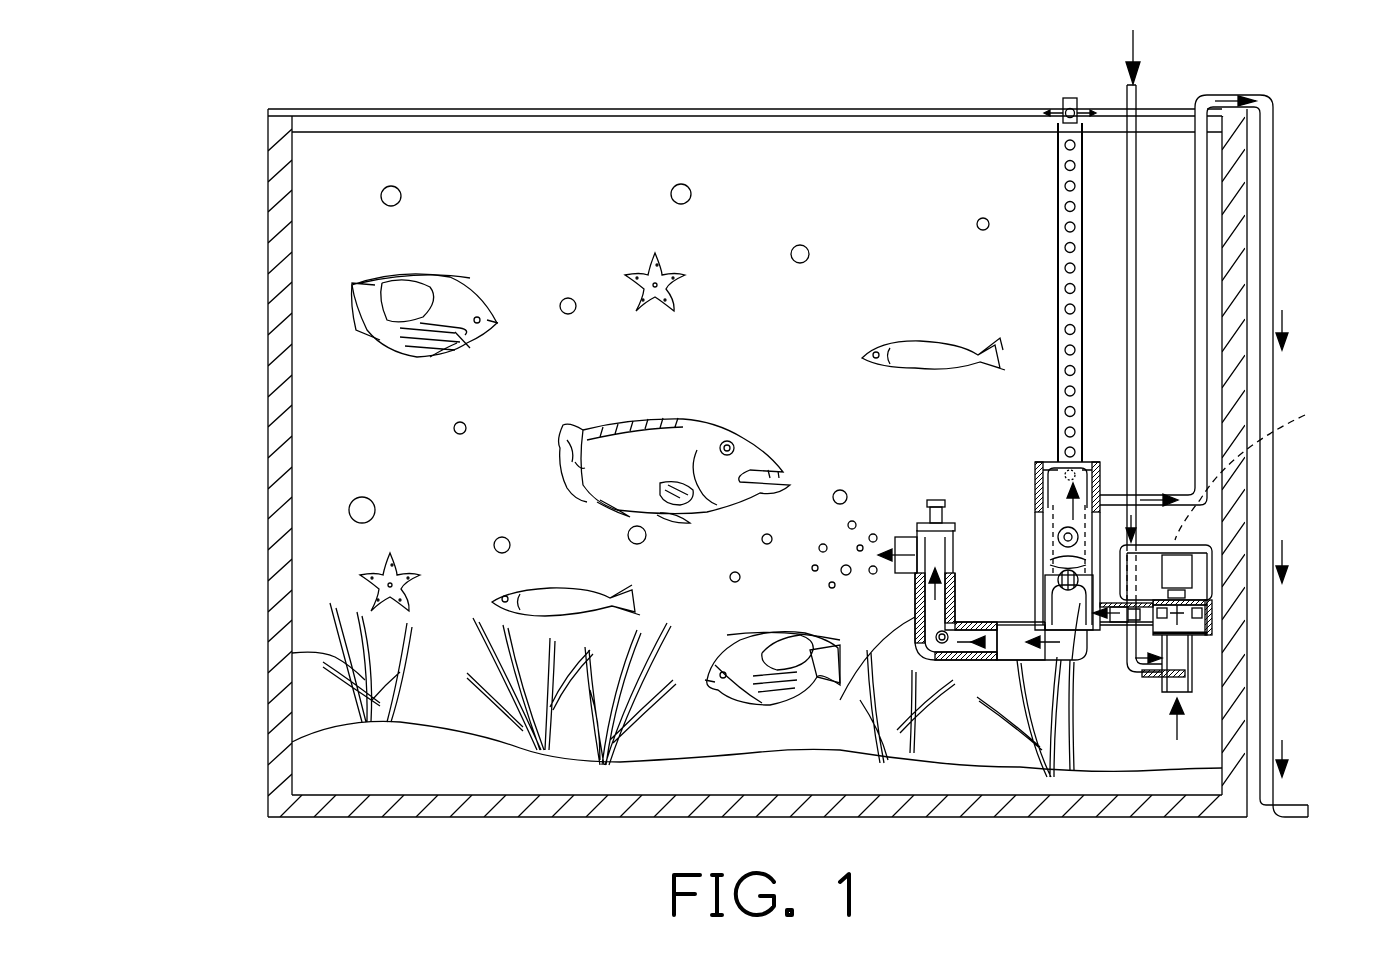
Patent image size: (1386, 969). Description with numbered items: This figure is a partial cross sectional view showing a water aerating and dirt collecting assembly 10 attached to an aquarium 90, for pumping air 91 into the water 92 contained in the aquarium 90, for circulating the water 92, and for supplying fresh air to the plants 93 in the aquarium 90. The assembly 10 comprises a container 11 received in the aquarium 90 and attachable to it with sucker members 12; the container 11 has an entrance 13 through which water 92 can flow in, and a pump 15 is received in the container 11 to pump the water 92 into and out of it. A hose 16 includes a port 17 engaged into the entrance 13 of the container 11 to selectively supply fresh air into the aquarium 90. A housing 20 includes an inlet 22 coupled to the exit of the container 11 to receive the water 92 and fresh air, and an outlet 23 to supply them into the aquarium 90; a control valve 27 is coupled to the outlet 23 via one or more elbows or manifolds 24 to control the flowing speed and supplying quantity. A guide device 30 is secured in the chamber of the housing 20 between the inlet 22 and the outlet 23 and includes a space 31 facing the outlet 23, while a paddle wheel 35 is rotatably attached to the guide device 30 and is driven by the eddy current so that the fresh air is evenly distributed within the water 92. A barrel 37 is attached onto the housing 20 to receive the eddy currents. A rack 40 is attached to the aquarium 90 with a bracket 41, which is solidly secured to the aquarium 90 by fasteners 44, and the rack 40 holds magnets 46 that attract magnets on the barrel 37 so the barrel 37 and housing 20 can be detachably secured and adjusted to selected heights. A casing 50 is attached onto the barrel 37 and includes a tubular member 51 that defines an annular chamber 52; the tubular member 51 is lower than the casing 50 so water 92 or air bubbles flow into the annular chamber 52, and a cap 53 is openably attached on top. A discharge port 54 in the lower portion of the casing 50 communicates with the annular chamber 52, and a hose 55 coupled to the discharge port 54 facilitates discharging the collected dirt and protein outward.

The water aerating and dirt collecting assembly 10 is at (1210, 582).
The container 11 is at (1205, 555).
The sucker members 12 is at (1212, 568).
The entrance 13 is at (1192, 662).
The pump 15 is at (1257, 462).
The hose 16 is at (1138, 102).
The port 17 is at (1150, 672).
The housing 20 is at (1040, 617).
The inlet 22 is at (1112, 625).
The outlet 23 is at (1073, 610).
The elbows or manifolds 24 is at (913, 575).
The control valve 27 is at (933, 540).
The guide device 30 is at (1055, 605).
The space 31 is at (1092, 625).
The paddle wheel 35 is at (1040, 575).
The barrel 37 is at (1035, 537).
The rack 40 is at (1058, 245).
The bracket 41 is at (1070, 97).
The fasteners 44 is at (1053, 110).
The magnets 46 is at (1067, 208).
The casing 50 is at (1033, 490).
The tubular member 51 is at (1087, 470).
The annular chamber 52 is at (1043, 477).
The cap 53 is at (1050, 462).
The discharge port 54 is at (1117, 493).
The hose 55 is at (1275, 200).
The aquarium 90 is at (280, 393).
The air 91 is at (355, 511).
The water 92 is at (302, 318).
The plants 93 is at (300, 657).